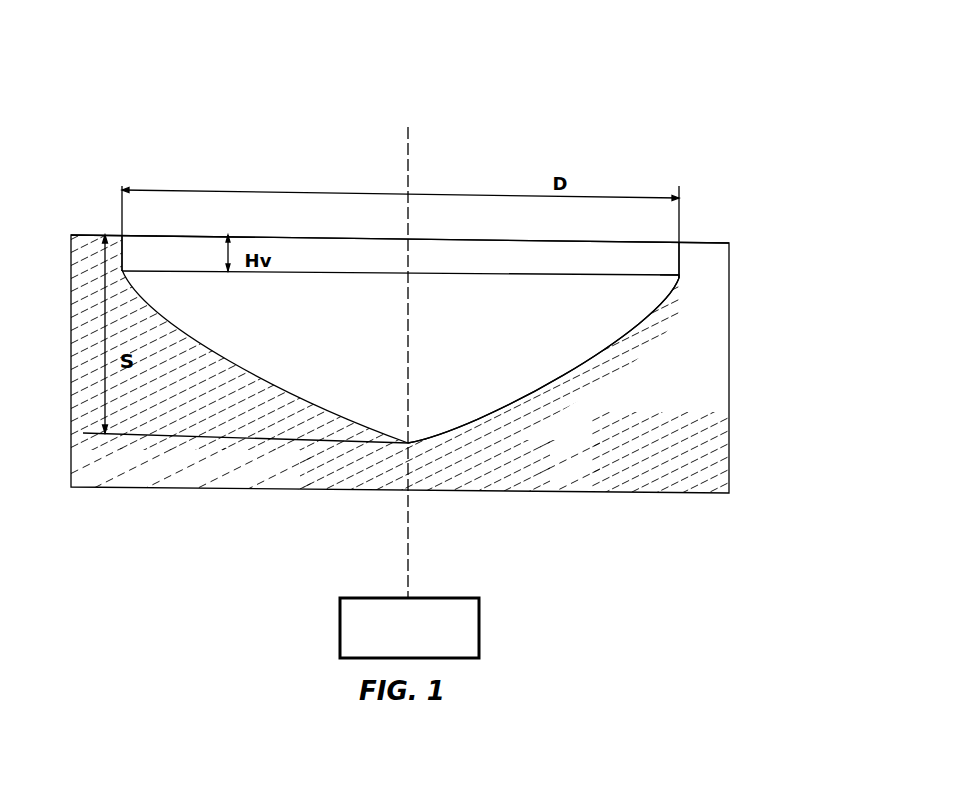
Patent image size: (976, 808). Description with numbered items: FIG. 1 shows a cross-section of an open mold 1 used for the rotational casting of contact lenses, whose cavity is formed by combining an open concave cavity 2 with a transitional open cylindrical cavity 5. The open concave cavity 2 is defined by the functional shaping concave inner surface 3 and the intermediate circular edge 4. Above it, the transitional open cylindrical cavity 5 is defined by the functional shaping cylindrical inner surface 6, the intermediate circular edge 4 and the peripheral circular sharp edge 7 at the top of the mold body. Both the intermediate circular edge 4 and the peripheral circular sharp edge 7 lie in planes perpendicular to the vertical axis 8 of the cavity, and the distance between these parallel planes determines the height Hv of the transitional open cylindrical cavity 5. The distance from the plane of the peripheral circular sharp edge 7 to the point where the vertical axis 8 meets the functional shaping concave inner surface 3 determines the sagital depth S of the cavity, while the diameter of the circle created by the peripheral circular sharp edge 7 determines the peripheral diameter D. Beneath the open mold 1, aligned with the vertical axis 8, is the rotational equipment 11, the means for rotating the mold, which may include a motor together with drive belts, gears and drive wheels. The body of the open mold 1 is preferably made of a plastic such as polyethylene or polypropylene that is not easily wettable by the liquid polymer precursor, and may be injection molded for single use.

The open mold 1 is at (615, 413).
The open concave cavity 2 is at (320, 350).
The functional shaping concave inner surface 3 is at (595, 352).
The intermediate circular edge 4 is at (194, 268).
The transitional open cylindrical cavity 5 is at (290, 252).
The functional shaping cylindrical inner surface 6 is at (678, 263).
The peripheral circular sharp edge 7 is at (192, 236).
The vertical axis 8 is at (408, 575).
The rotational equipment 11 is at (479, 630).